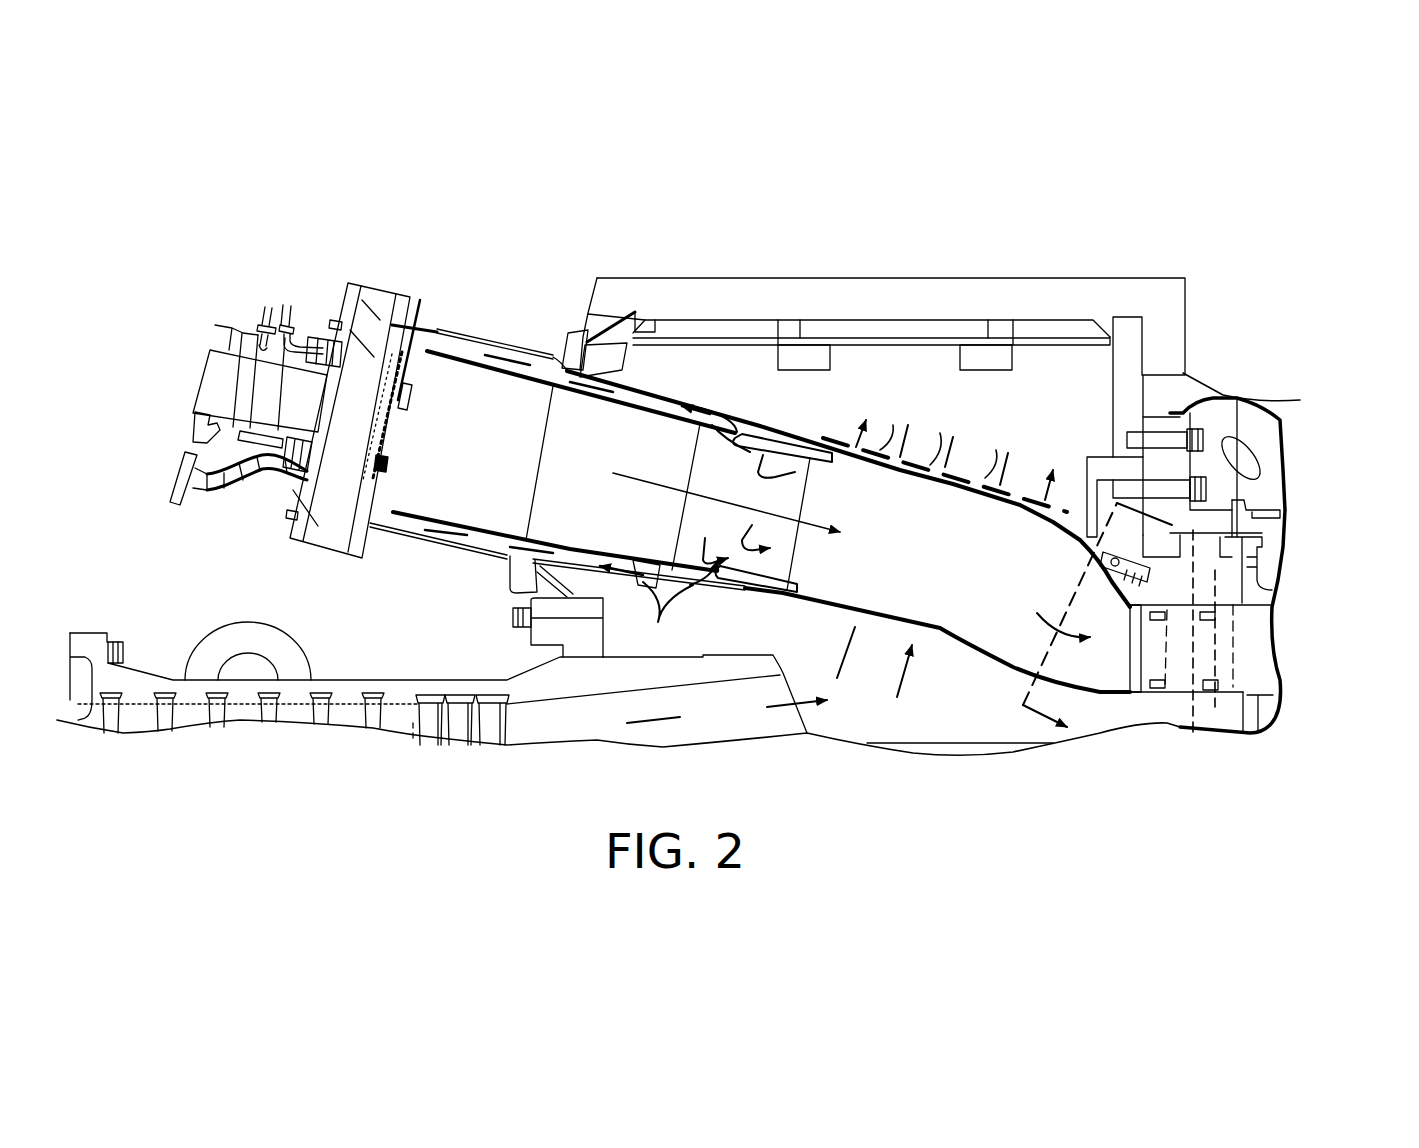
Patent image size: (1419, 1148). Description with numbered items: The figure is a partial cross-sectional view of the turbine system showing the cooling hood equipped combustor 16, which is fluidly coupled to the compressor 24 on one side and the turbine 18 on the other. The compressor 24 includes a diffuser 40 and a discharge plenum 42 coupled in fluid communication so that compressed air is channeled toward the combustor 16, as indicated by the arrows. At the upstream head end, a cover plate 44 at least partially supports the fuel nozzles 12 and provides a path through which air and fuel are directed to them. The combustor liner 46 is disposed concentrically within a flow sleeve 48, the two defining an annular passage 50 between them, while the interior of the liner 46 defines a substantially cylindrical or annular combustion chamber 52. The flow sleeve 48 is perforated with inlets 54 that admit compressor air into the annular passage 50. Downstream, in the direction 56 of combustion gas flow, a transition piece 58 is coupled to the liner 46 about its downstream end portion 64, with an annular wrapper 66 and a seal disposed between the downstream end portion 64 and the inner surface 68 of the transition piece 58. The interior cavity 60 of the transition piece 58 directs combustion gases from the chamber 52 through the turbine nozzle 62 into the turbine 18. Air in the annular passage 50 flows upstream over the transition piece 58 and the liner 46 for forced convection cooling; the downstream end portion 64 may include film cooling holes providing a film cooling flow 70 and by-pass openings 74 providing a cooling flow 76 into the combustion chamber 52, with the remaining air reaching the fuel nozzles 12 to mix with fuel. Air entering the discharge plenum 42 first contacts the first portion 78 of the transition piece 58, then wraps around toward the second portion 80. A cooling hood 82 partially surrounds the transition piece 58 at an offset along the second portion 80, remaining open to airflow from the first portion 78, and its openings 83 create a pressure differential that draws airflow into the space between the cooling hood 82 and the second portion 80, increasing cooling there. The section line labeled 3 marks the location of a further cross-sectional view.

The fuel nozzles 12 is at (428, 412).
The combustor 16 is at (813, 222).
The turbine 18 is at (1320, 723).
The compressor 24 is at (340, 673).
The diffuser 40 is at (723, 727).
The discharge plenum 42 is at (1110, 725).
The cover plate 44 is at (372, 303).
The combustor liner 46 is at (445, 522).
The flow sleeve 48 is at (532, 348).
The annular passage 50 is at (467, 350).
The combustion chamber 52 is at (483, 443).
The inlets 54 is at (601, 607).
The direction 56 is at (685, 488).
The transition piece 58 is at (950, 517).
The interior cavity 60 is at (994, 580).
The turbine nozzle 62 is at (1223, 653).
The downstream end portion 64 is at (773, 573).
The annular wrapper 66 is at (827, 465).
The inner surface 68 is at (1013, 667).
The film cooling flow 70 is at (760, 503).
The by-pass openings 74 is at (705, 428).
The cooling flow 76 is at (730, 442).
The first portion 78 is at (973, 648).
The second portion 80 is at (1066, 528).
The cooling hood 82 is at (850, 440).
The openings 83 is at (923, 463).
The section line 3- 3 is at (1107, 615).